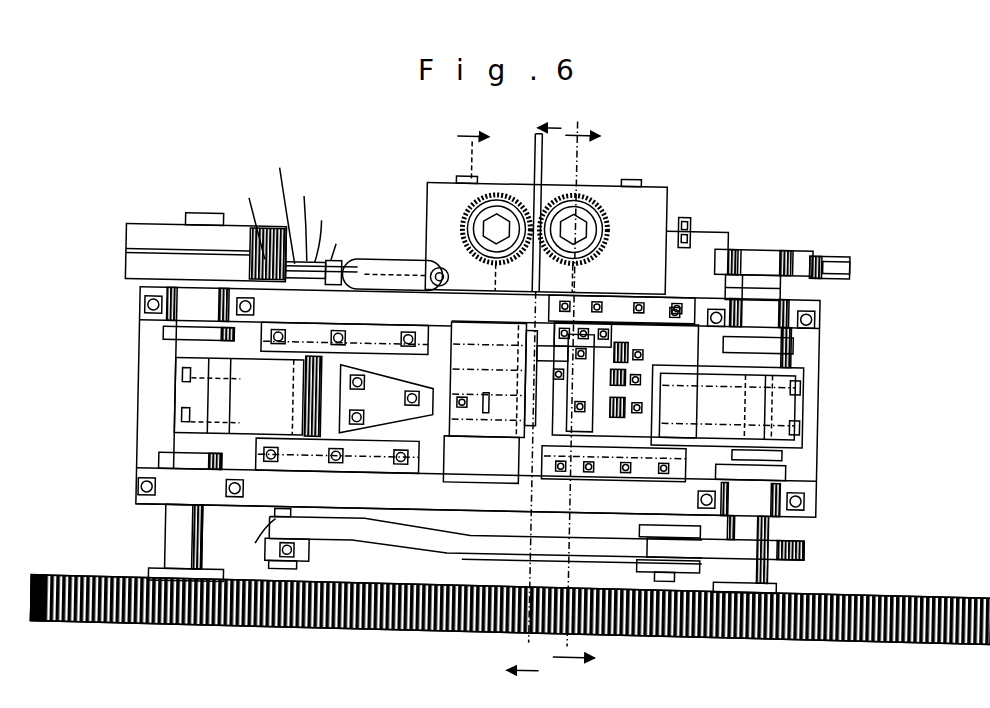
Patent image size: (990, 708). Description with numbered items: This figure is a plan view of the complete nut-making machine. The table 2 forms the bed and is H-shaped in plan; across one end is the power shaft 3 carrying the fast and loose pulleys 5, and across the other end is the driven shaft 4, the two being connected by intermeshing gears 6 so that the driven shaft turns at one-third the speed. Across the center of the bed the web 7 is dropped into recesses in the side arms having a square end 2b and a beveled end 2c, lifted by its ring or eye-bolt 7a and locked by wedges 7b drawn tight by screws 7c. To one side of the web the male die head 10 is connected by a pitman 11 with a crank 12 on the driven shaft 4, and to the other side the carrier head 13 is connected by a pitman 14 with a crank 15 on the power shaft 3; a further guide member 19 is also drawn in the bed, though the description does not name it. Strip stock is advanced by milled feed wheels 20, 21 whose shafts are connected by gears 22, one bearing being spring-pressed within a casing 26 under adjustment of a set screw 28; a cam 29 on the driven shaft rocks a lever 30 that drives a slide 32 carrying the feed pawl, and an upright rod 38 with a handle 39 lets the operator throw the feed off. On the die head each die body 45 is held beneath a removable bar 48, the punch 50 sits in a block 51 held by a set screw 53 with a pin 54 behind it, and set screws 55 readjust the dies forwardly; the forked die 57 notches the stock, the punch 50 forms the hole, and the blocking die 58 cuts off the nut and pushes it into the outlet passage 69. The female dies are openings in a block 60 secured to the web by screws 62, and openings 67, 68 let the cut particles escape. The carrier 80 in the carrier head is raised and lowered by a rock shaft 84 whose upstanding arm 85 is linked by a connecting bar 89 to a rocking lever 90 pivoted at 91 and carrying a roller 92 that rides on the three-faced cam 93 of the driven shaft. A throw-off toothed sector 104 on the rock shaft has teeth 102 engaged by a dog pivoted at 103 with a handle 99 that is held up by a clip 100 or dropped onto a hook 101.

The table 2 is at (140, 432).
The square end of recess 2b is at (557, 522).
The beveled end of recess 2c is at (433, 485).
The power shaft 3 is at (178, 534).
The driven shaft 4 is at (775, 578).
The fast and loose pulleys 5 is at (126, 237).
The intermeshing gear 6 is at (846, 628).
The web 7 is at (487, 482).
The ring or eye-bolt 7a is at (503, 351).
The wedges 7b is at (420, 399).
The screws 7c is at (437, 403).
The male die head 10 is at (652, 322).
The pitman 11 is at (765, 398).
The crank 12 is at (770, 415).
The carrier head 13 is at (335, 358).
The pitman 14 is at (200, 395).
The crank 15 is at (248, 394).
The guide bar 19 is at (417, 425).
The feed wheel 20 is at (612, 235).
The feed wheel 21 is at (474, 228).
The gears 22 is at (579, 385).
The casing 26 is at (645, 194).
The set screw 28 is at (691, 222).
The cam 29 is at (770, 260).
The lever 30 is at (833, 262).
The slide 32 is at (740, 249).
The upright rod 38 is at (432, 270).
The handle 39 is at (375, 266).
The die body 45 is at (623, 320).
The removable bar 48 is at (582, 332).
The punch 50 is at (566, 480).
The block 51 is at (727, 406).
The set screw 53 is at (630, 361).
The pin 54 is at (686, 372).
The set screws 55 is at (700, 413).
The forked die 57 is at (545, 335).
The blocking die 58 is at (523, 420).
The block 60 is at (481, 459).
The screws 62 is at (526, 483).
The opening 67 is at (488, 368).
The opening 68 is at (440, 328).
The outlet passage 69 is at (463, 442).
The carrier 80 is at (386, 400).
The rock shaft 84 is at (269, 357).
The upstanding arm 85 is at (301, 553).
The connecting bar 89 is at (410, 541).
The rocking lever 90 is at (692, 583).
The pivot 91 is at (667, 583).
The roller 92 is at (730, 565).
The cam 93 is at (808, 548).
The handle 99 is at (278, 201).
The clip or stop 100 is at (343, 249).
The stop or hook 101 is at (345, 276).
The teeth 102 is at (326, 227).
The pivot 103 is at (244, 214).
The toothed sector 104 is at (292, 282).